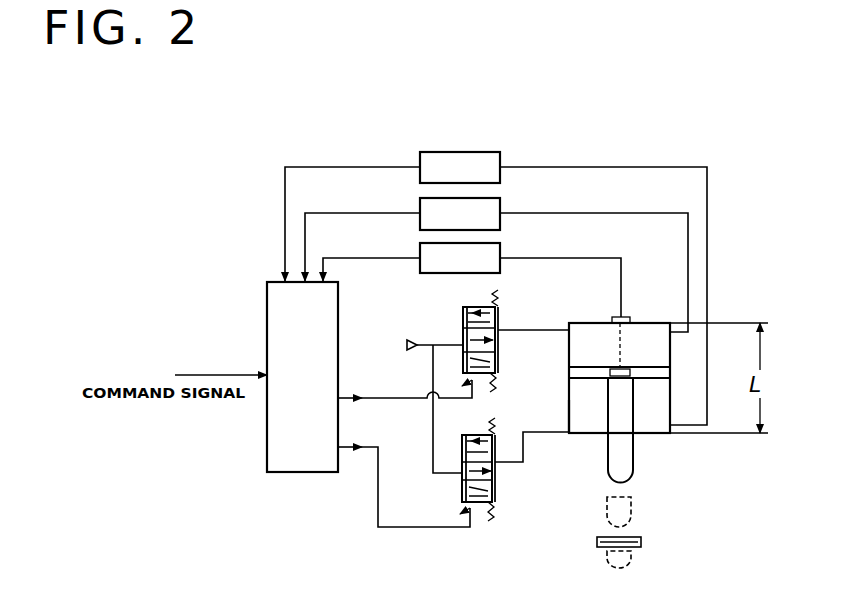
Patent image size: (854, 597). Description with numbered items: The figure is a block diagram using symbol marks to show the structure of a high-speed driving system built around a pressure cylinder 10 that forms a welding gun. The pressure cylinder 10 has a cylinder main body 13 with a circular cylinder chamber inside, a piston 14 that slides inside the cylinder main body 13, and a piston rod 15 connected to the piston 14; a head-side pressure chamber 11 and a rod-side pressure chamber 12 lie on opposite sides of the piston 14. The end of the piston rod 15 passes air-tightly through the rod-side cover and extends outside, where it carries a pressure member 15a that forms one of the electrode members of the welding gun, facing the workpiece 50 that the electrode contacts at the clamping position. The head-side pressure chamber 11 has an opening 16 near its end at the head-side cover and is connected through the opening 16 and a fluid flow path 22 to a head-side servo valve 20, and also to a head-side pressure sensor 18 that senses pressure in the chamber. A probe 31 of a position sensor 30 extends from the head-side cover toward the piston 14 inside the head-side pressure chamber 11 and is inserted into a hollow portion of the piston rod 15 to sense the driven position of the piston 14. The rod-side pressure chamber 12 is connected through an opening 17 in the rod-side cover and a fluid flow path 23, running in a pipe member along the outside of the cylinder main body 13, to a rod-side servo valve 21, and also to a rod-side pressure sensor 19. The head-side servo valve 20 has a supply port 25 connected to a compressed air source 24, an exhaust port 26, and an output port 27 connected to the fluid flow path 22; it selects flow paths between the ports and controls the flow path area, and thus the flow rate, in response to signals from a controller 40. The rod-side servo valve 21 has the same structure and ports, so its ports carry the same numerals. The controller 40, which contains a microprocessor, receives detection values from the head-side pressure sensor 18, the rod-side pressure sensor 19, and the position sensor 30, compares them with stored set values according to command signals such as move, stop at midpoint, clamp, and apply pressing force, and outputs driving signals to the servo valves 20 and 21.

The pressure cylinder 10 is at (672, 352).
The head-side pressure chamber 11 is at (655, 330).
The rod-side pressure chamber 12 is at (655, 436).
The cylinder main body 13 is at (672, 402).
The piston 14 is at (570, 372).
The piston rod 15 is at (617, 407).
The pressure member 15a is at (623, 466).
The opening 16 is at (575, 323).
The opening 17 is at (569, 431).
The head-side pressure sensor 18 is at (420, 205).
The rod-side pressure sensor 19 is at (420, 158).
The head-side servo valve 20 is at (494, 307).
The rod-side servo valve 21 is at (501, 494).
The fluid flow path 22 is at (540, 329).
The fluid flow path 23 is at (548, 433).
The compressed air source 24 is at (405, 345).
The supply port 25 is at (465, 348).
The exhaust port 26 is at (465, 330).
The output port 27 is at (499, 330).
The position sensor 30 is at (420, 250).
The probe 31 is at (625, 337).
The controller 40 is at (267, 306).
The workpiece 50 is at (597, 541).